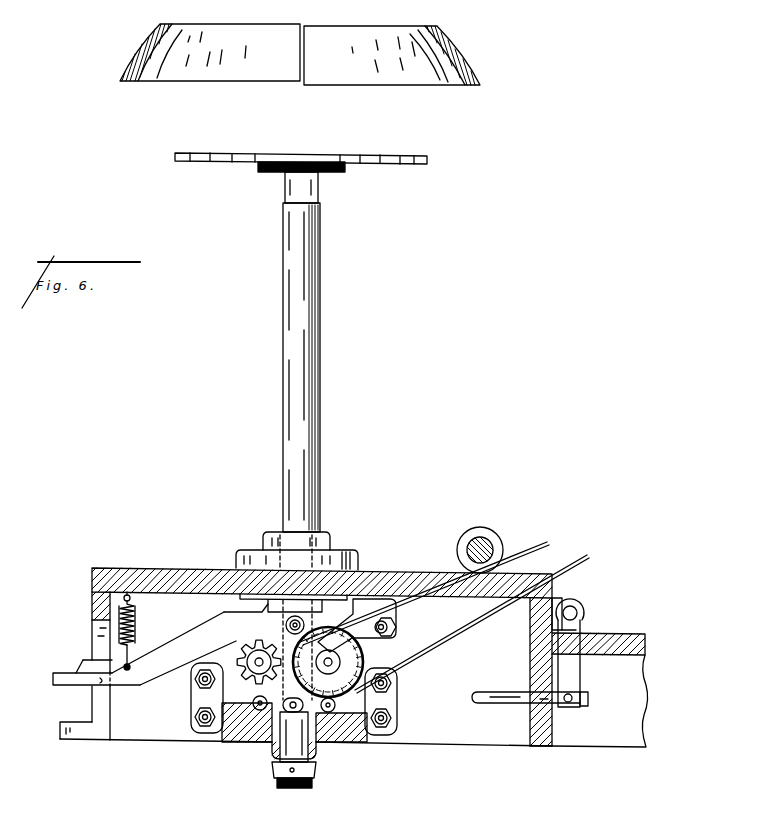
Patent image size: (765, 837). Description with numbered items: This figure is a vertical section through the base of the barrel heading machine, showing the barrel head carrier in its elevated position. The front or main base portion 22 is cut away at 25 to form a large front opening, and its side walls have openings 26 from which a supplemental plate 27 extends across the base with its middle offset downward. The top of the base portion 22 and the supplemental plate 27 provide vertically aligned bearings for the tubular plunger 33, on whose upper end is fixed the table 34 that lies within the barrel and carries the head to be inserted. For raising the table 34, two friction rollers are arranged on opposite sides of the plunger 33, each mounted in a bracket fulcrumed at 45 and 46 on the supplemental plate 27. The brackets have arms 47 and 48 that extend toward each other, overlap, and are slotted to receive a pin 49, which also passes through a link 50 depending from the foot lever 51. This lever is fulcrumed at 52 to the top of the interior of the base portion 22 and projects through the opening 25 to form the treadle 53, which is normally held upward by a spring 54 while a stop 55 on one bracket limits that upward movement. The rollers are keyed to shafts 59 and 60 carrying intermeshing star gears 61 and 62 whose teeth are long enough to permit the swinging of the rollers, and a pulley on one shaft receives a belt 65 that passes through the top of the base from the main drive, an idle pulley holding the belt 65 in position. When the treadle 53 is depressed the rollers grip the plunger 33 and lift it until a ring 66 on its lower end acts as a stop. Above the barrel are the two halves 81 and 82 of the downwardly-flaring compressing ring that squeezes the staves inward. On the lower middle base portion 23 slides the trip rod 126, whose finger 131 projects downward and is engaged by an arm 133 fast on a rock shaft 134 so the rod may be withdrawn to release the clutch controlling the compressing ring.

The front or main base portion 22 is at (306, 642).
The lower middle portion 23 is at (607, 633).
The cut-away opening 25 is at (92, 636).
The side openings 26 is at (237, 618).
The supplemental plate 27 is at (235, 743).
The plunger 33 is at (318, 403).
The table 34 is at (248, 153).
The fulcrum 45 is at (222, 728).
The fulcrum 46 is at (303, 705).
The bracket arm 47 is at (272, 718).
The bracket arm 48 is at (322, 737).
The pin 49 is at (290, 712).
The link 50 is at (192, 691).
The foot lever 51 is at (192, 636).
The fulcrum 52 is at (392, 620).
The treadle 53 is at (66, 673).
The spring 54 is at (135, 624).
The stop 55 is at (352, 738).
The roller shaft 59 is at (338, 662).
The roller shaft 60 is at (232, 662).
The star gear 61 is at (259, 660).
The star gear 62 is at (394, 676).
The belt 65 is at (455, 630).
The ring 66 is at (314, 776).
The ring half 81 is at (392, 55).
The hinged ring half 82 is at (210, 52).
The rod 126 is at (574, 608).
The finger 131 is at (592, 640).
The arm 133 is at (570, 676).
The rock shaft 134 is at (512, 703).